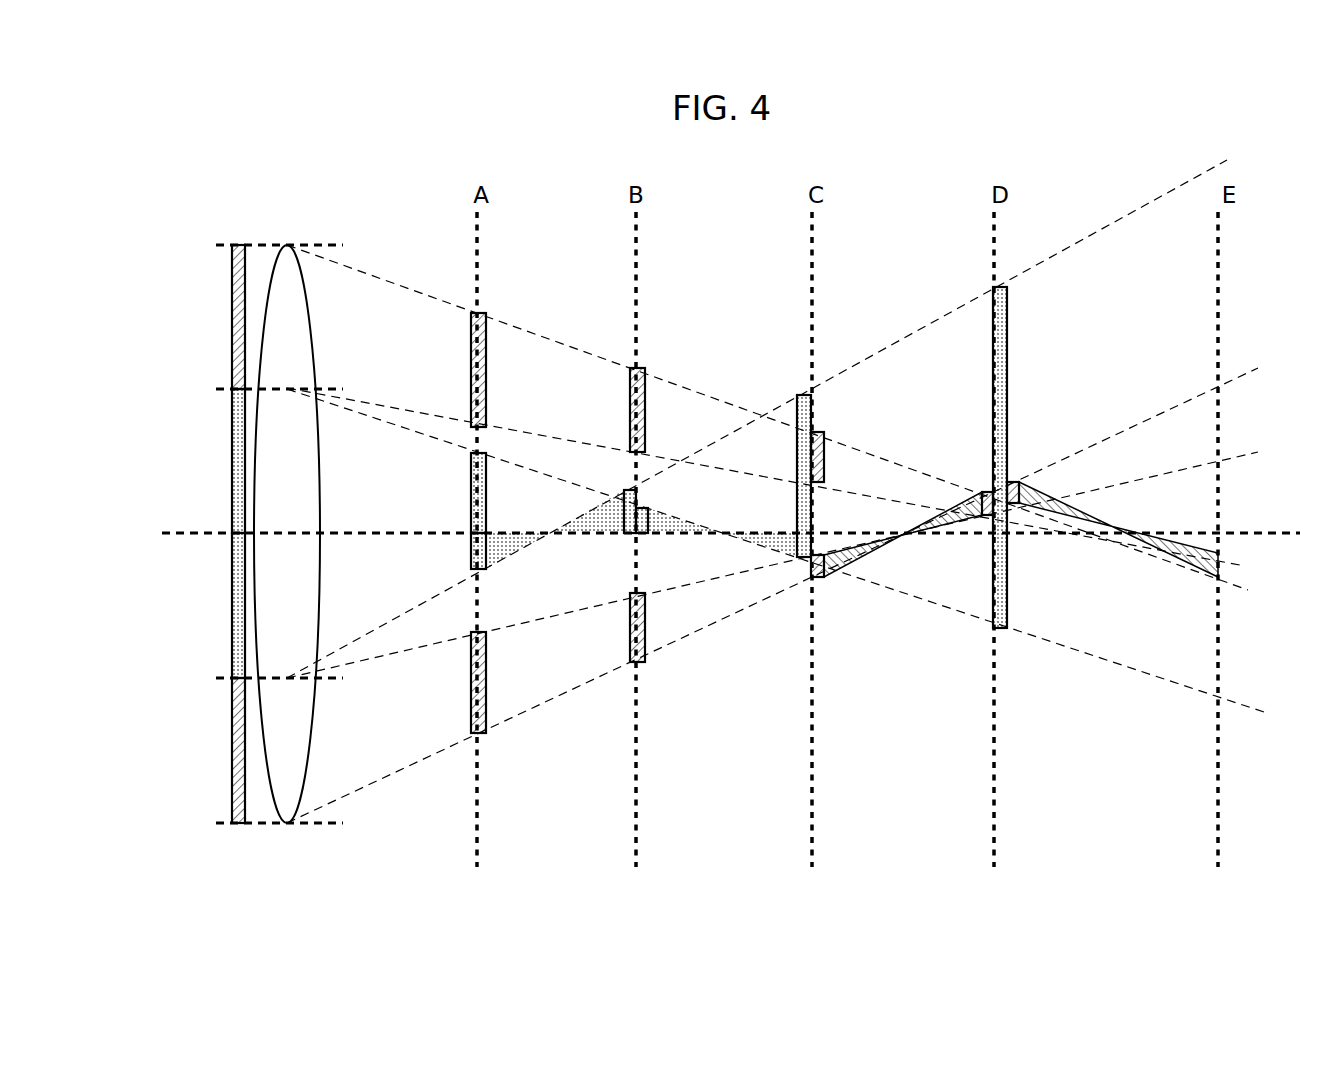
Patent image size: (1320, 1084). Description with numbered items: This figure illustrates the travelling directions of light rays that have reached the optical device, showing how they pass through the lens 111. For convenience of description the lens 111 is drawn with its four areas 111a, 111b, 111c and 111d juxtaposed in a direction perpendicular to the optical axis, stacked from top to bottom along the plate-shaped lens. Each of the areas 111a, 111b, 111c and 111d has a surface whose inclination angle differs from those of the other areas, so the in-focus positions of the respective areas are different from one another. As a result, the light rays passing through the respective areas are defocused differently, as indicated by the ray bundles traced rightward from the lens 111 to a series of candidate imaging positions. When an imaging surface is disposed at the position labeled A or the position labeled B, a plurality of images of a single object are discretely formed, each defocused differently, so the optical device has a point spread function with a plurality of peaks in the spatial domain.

The lens 111 is at (211, 502).
The first area of the lens 111a is at (277, 313).
The second area of the lens 111b is at (277, 460).
The third area of the lens 111c is at (283, 600).
The fourth area of the lens 111d is at (280, 735).